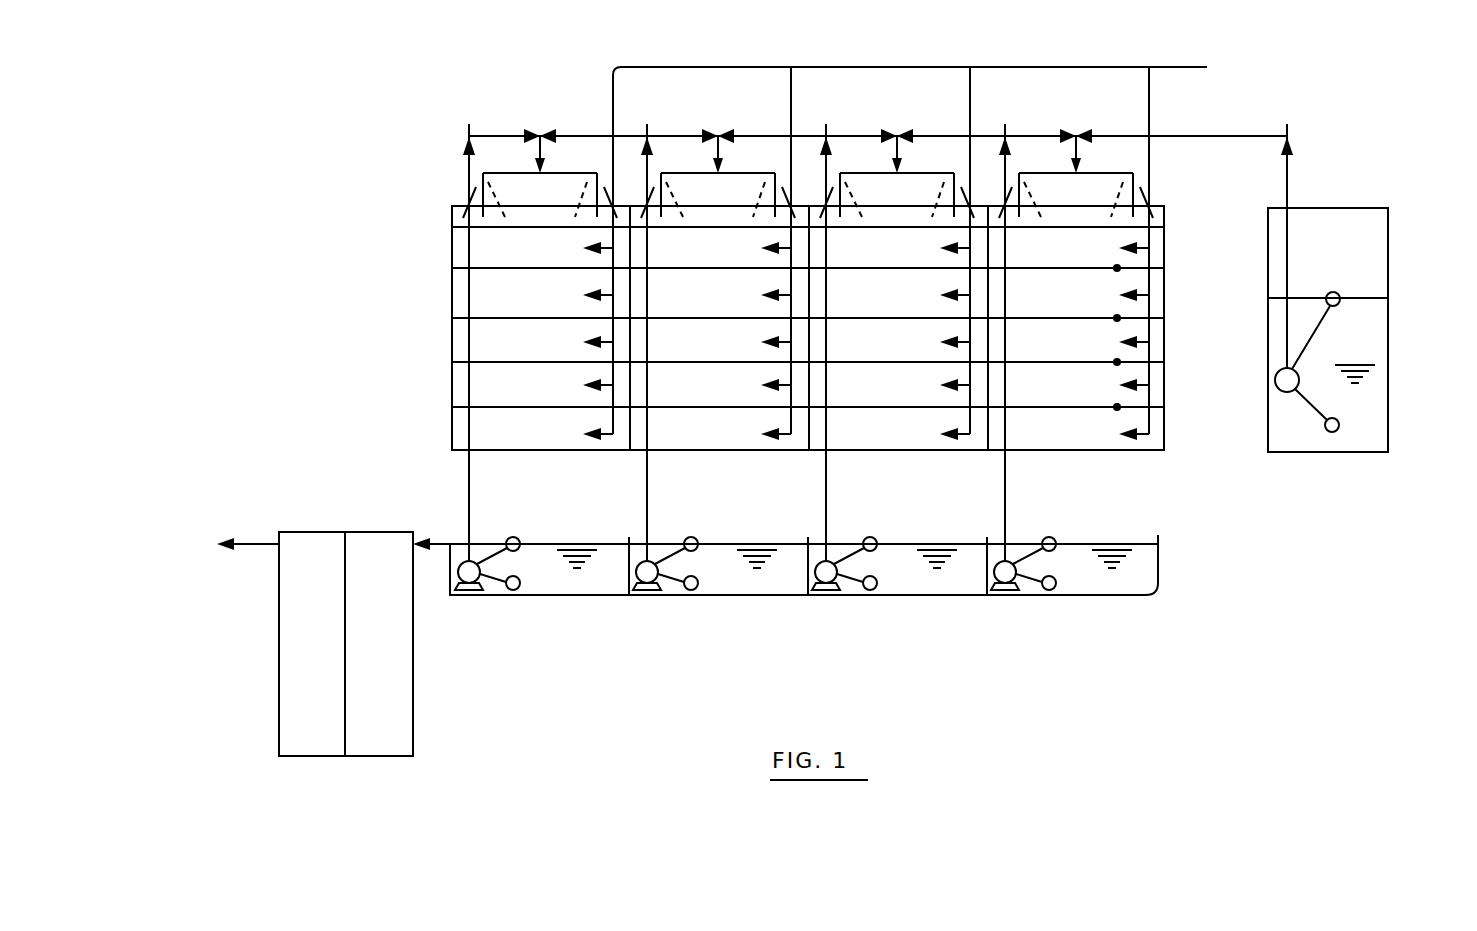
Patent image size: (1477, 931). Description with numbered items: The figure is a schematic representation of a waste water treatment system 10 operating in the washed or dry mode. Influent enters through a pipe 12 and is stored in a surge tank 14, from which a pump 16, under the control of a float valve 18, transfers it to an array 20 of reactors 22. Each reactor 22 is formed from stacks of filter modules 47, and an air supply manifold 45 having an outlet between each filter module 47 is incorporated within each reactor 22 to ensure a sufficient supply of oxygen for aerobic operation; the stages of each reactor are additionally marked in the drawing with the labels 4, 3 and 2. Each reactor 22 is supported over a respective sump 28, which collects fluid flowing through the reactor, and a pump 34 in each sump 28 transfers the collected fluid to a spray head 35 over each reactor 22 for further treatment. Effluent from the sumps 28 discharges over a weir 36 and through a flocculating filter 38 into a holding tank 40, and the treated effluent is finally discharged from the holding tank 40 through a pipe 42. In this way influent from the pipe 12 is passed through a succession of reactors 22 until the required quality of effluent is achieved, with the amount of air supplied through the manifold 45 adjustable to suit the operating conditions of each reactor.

The waste treatment system 10 is at (392, 296).
The array 20 is at (448, 204).
The reactor 22 is at (452, 386).
The filter module 47 is at (478, 250).
The media stages 4 is at (751, 341).
The air supply manifold 45 is at (1094, 66).
The spray head 35 is at (843, 172).
The sump 28 is at (586, 586).
The pump 34 is at (487, 545).
The pump stage labels 3 is at (737, 610).
The weir 36 is at (448, 540).
The holding tank 40 is at (312, 644).
The flocculating filter 38 is at (379, 644).
The pipe 42 is at (258, 546).
The pipe 12 is at (1405, 228).
The surge tank 14 is at (1330, 443).
The pump 16 is at (1275, 380).
The float valve 18 is at (1325, 318).
The feed pump label 2 is at (1287, 413).